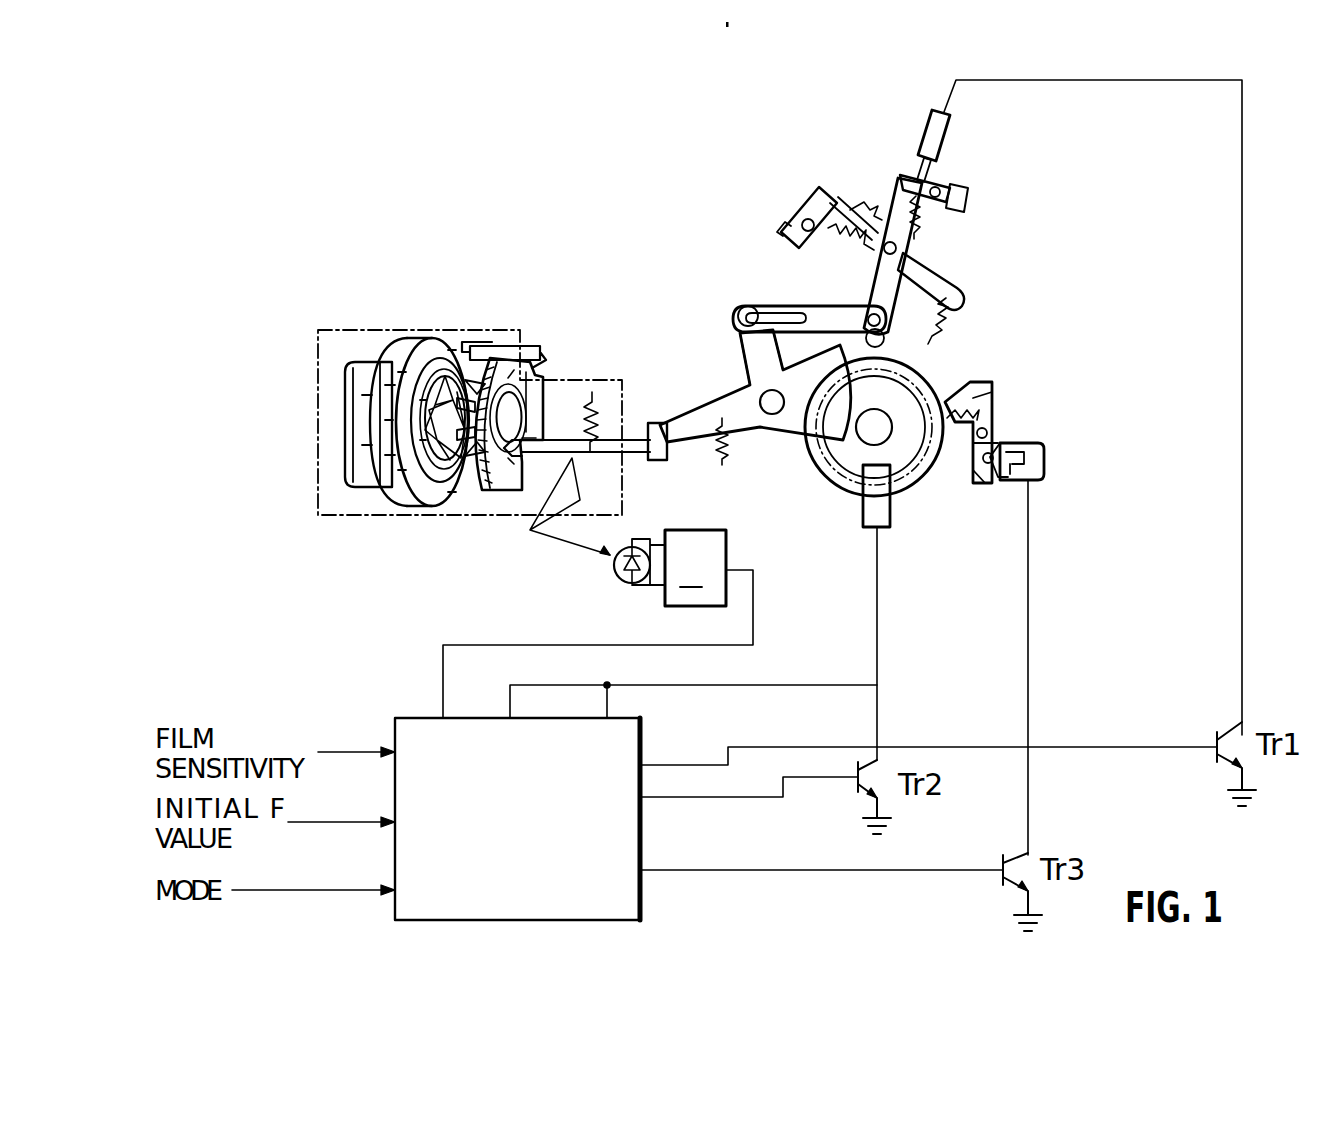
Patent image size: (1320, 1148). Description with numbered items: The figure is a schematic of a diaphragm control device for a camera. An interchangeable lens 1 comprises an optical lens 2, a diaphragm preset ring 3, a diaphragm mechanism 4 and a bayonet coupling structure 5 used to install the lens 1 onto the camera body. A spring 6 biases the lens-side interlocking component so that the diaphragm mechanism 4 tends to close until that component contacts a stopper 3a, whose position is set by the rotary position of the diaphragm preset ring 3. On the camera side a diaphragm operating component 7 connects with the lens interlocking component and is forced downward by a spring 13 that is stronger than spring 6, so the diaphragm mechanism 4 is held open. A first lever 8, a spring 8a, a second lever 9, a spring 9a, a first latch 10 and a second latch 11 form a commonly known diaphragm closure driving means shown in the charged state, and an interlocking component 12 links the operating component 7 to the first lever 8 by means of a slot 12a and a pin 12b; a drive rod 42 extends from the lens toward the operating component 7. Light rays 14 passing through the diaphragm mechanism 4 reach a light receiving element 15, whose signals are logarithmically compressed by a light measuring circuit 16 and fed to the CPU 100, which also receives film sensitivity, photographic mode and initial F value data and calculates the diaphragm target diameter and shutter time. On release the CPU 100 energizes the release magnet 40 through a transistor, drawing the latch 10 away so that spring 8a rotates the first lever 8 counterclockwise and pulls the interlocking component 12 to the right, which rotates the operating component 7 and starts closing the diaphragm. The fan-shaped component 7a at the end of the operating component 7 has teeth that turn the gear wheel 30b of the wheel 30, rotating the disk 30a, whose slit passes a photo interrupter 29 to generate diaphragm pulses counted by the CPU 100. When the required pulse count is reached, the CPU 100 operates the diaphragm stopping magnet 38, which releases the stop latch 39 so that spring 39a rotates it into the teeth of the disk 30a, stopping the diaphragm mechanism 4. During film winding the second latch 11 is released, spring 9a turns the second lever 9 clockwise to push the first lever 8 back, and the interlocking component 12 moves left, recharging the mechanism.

The interchangeable lens 1 is at (345, 330).
The optical lens 2 is at (373, 470).
The diaphragm preset ring 3 is at (412, 503).
The stopper 3a is at (476, 365).
The diaphragm mechanism 4 is at (445, 488).
The bayonet coupling structure 5 is at (505, 496).
The spring 6 is at (589, 426).
The camera body-side diaphragm operating component 7 is at (796, 438).
The fan-shaped component 7a is at (750, 364).
The first lever 8 is at (876, 281).
The spring 8a is at (869, 212).
The second lever 9 is at (946, 288).
The spring 9a is at (967, 310).
The first stopping component or latch 10 is at (945, 184).
The second latch 11 is at (826, 206).
The interlocking component 12 is at (808, 317).
The slot 12a is at (744, 290).
The pin 12b is at (892, 335).
The spring 13 is at (743, 460).
The light rays 14 is at (569, 550).
The light receiving element 15 is at (620, 580).
The light measuring circuit 16 is at (679, 568).
The photo interrupter 29 is at (892, 516).
The wheel 30 is at (908, 495).
The disk 30a is at (932, 466).
The gear wheel 30b is at (869, 436).
The diaphragm stopping magnet 38 is at (1047, 463).
The stop latch 39 is at (995, 384).
The spring 39a is at (992, 418).
The release magnet 40 is at (916, 130).
The drive rod 42 is at (642, 444).
The CPU 100 is at (605, 920).